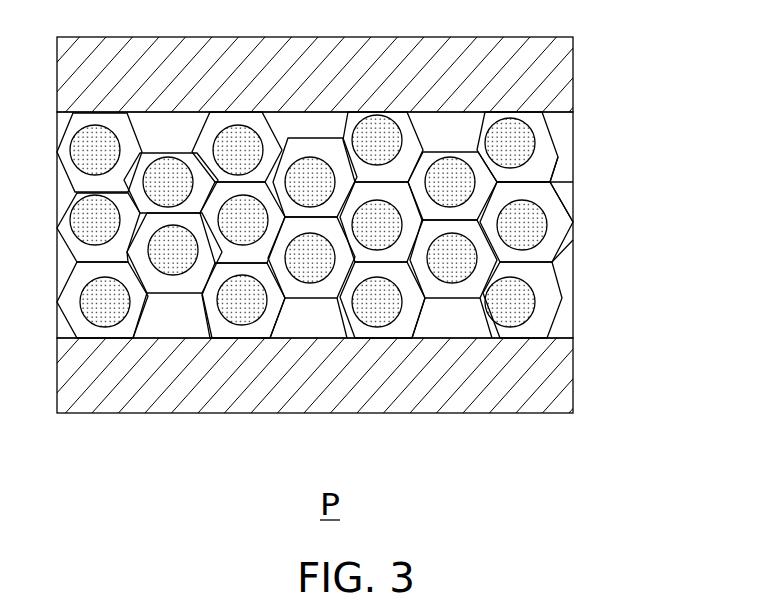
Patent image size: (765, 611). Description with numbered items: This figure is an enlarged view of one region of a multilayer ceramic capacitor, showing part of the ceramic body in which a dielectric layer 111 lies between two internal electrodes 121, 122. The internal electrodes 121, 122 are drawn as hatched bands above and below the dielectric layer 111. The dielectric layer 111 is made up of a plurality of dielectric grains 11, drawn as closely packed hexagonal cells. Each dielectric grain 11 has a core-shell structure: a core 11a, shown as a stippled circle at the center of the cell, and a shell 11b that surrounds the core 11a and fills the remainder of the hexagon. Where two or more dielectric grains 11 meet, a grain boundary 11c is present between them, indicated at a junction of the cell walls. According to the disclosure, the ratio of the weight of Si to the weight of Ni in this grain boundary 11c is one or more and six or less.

The internal electrode 121 is at (563, 73).
The internal electrode 122 is at (563, 377).
The dielectric layer 111 is at (382, 313).
The dielectric grain 11 is at (353, 313).
The core 11a is at (383, 312).
The shell 11b is at (412, 305).
The grain boundary 11c is at (573, 189).